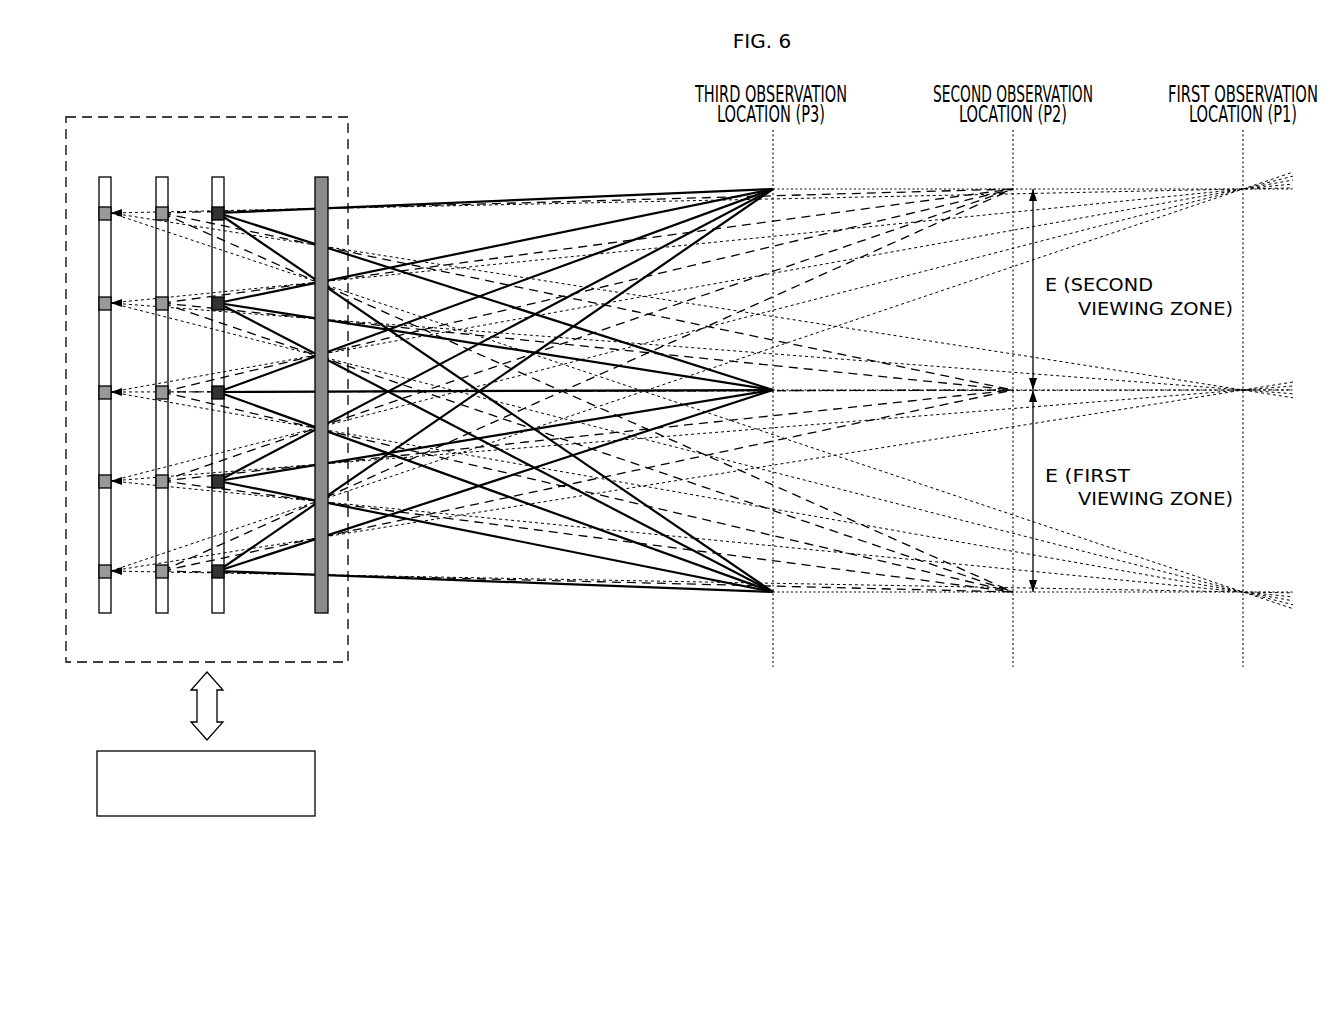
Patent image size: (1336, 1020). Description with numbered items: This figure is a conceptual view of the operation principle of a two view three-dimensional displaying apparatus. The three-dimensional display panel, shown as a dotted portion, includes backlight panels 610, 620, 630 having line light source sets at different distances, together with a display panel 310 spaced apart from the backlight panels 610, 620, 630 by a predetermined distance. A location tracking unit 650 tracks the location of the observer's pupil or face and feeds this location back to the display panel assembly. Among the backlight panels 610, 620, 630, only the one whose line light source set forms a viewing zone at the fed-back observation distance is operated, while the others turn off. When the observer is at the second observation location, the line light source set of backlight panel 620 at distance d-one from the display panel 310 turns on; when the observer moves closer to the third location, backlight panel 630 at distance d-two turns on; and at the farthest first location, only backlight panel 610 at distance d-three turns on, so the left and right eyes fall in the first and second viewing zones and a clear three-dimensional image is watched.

The backlight panel 610 is at (104, 378).
The backlight panel 620 is at (161, 378).
The backlight panel 630 is at (217, 378).
The display panel 310 is at (320, 378).
The location tracking unit 650 is at (206, 783).